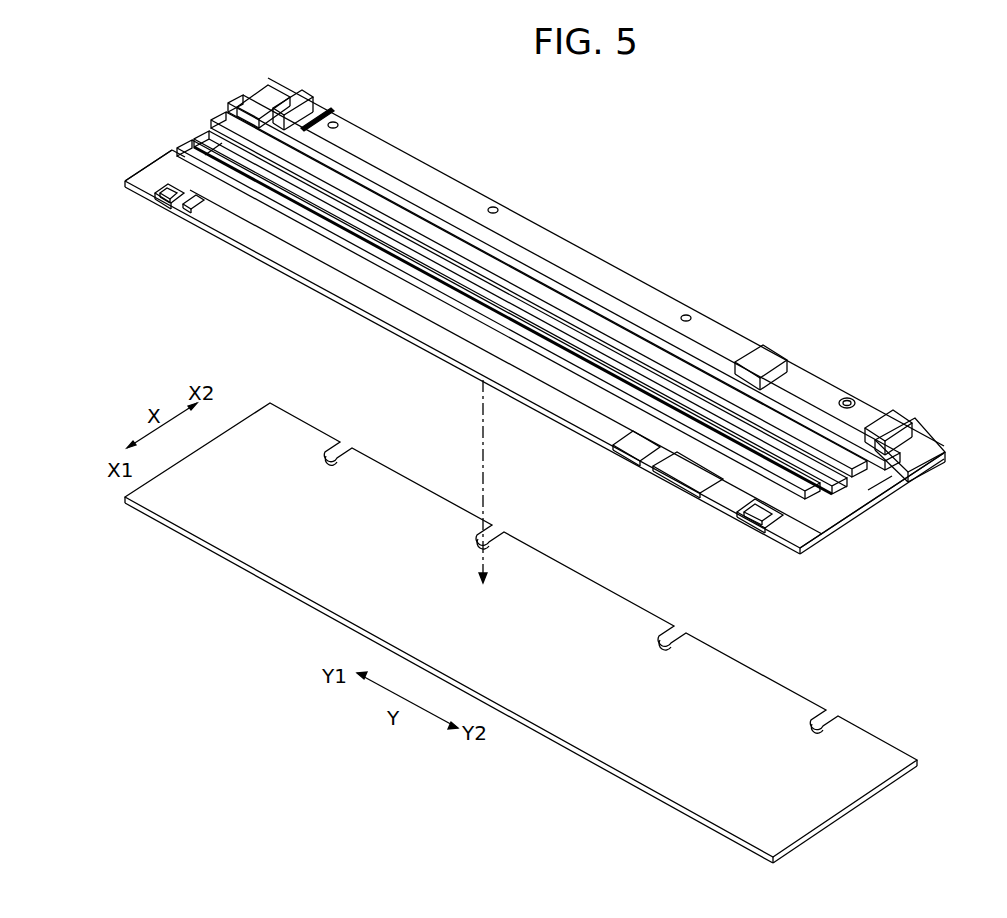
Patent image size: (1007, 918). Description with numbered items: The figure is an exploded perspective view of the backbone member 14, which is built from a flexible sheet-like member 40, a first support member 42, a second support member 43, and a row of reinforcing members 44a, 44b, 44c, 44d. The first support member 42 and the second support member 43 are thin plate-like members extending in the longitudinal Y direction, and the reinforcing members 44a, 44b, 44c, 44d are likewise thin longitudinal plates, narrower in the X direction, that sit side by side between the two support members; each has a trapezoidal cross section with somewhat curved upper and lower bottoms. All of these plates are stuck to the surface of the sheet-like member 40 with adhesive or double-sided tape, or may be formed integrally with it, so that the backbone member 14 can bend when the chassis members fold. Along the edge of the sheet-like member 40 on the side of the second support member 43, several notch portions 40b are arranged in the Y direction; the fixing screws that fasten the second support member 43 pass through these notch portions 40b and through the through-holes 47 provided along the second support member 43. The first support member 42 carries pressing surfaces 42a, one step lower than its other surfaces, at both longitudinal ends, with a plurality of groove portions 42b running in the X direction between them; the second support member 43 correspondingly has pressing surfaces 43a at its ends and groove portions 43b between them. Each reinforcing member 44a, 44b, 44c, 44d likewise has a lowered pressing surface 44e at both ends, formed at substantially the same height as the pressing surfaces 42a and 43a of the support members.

The backbone member 14 is at (70, 82).
The sheet-like member 40 is at (563, 742).
The notch portions 40b is at (343, 440).
The first support member 42 is at (333, 298).
The pressing surfaces 42a is at (146, 177).
The groove portions 42b is at (168, 207).
The second support member 43 is at (462, 178).
The pressing surfaces 43a is at (265, 96).
The groove portions 43b is at (300, 104).
The reinforcing member 44a is at (176, 139).
The reinforcing member 44b is at (192, 128).
The reinforcing member 44c is at (208, 117).
The reinforcing member 44d is at (227, 107).
The pressing surface 44e is at (220, 157).
The through-holes 47 is at (337, 123).